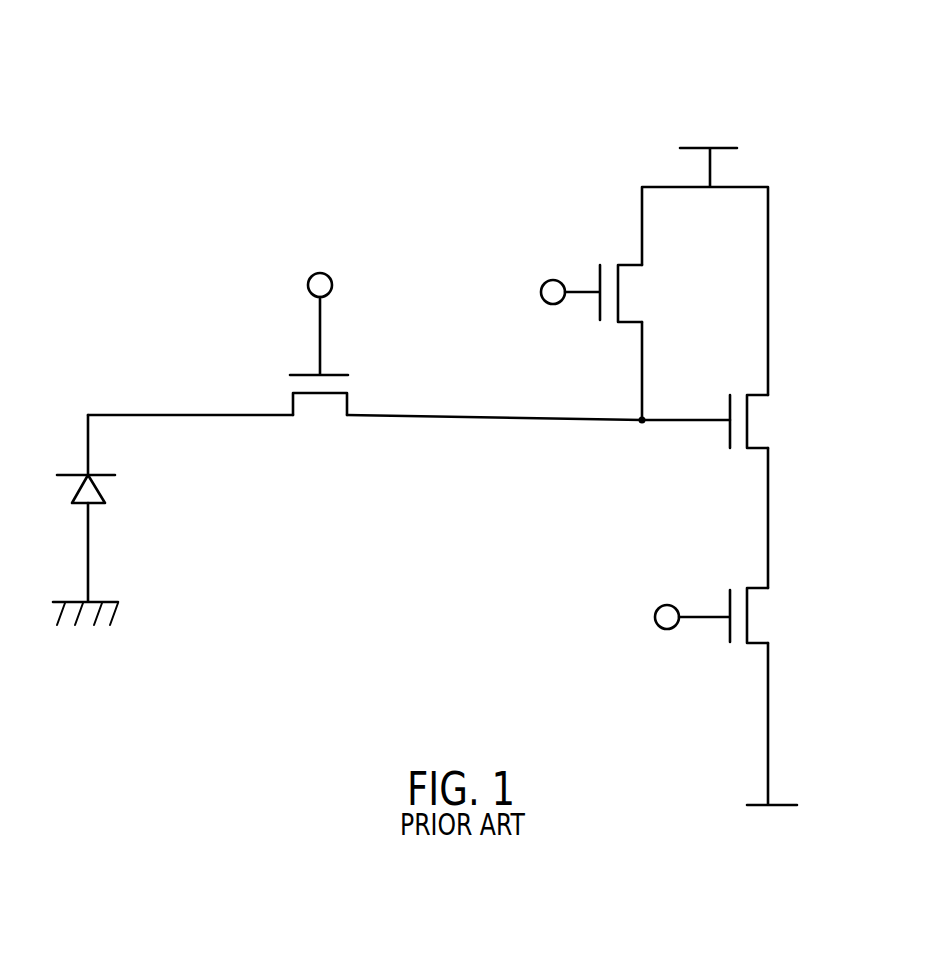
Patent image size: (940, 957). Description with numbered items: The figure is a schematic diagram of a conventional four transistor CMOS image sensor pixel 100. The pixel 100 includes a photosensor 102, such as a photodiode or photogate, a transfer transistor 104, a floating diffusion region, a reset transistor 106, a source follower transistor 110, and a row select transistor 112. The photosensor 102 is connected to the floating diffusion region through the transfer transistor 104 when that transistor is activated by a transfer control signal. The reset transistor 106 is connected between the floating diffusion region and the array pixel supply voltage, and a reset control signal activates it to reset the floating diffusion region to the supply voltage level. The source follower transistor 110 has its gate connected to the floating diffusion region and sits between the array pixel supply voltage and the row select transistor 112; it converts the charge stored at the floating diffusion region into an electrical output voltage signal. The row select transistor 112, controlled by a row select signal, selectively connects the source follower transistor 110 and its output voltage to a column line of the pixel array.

The four transistor CMOS image sensor pixel 100 is at (868, 92).
The photosensor 102 is at (83, 470).
The transfer transistor 104 is at (293, 385).
The reset transistor 106 is at (613, 262).
The source follower transistor 110 is at (738, 393).
The row select transistor 112 is at (740, 588).